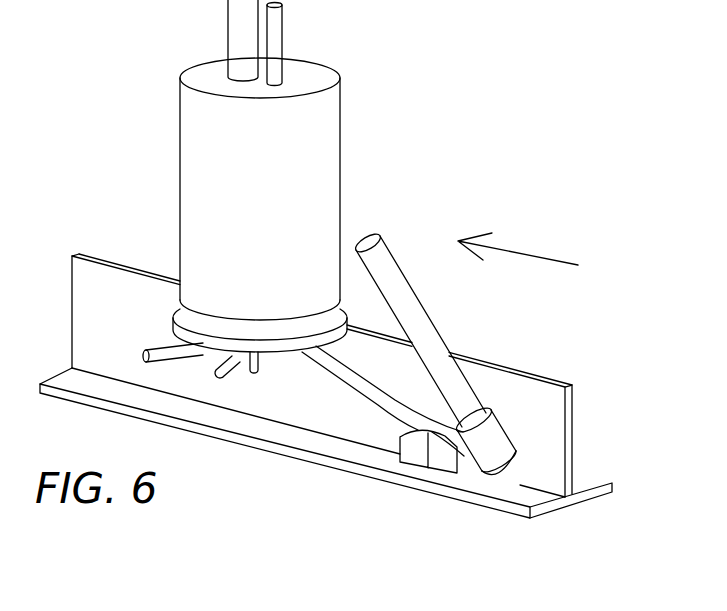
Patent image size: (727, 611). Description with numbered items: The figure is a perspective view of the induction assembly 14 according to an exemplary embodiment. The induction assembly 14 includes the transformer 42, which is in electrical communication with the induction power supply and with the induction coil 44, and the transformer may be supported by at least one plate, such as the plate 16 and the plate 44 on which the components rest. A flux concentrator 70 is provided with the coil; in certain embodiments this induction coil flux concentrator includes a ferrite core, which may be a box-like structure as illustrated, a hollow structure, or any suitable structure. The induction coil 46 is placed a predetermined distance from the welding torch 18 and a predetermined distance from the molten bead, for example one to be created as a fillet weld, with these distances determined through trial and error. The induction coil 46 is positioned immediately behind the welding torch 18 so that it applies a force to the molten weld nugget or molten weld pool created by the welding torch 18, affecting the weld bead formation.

The induction assembly 14 is at (160, 113).
The transformer 42 is at (327, 170).
The back plate 16 is at (573, 508).
The induction coil 44 is at (310, 462).
The welding torch 18 is at (442, 327).
The induction coil 46 is at (332, 390).
The flux concentrator 70 is at (417, 450).